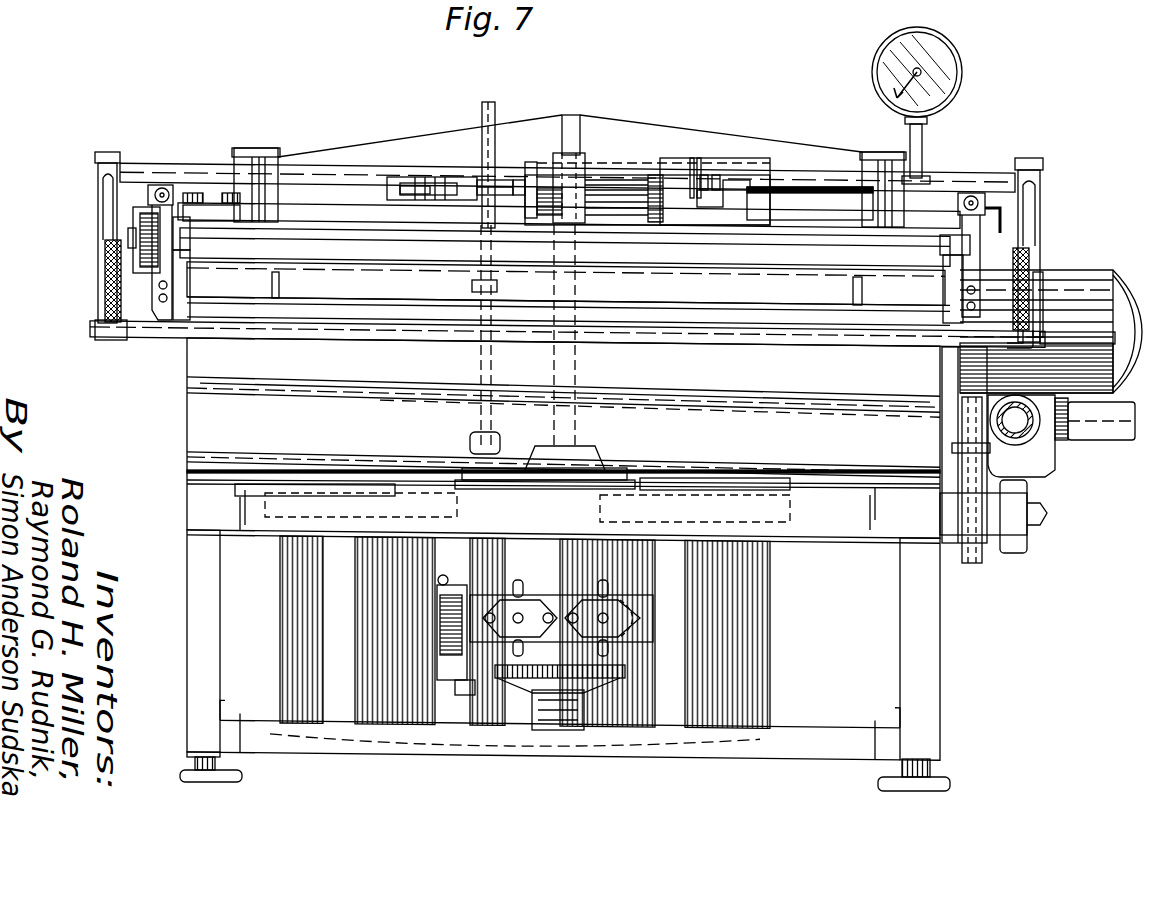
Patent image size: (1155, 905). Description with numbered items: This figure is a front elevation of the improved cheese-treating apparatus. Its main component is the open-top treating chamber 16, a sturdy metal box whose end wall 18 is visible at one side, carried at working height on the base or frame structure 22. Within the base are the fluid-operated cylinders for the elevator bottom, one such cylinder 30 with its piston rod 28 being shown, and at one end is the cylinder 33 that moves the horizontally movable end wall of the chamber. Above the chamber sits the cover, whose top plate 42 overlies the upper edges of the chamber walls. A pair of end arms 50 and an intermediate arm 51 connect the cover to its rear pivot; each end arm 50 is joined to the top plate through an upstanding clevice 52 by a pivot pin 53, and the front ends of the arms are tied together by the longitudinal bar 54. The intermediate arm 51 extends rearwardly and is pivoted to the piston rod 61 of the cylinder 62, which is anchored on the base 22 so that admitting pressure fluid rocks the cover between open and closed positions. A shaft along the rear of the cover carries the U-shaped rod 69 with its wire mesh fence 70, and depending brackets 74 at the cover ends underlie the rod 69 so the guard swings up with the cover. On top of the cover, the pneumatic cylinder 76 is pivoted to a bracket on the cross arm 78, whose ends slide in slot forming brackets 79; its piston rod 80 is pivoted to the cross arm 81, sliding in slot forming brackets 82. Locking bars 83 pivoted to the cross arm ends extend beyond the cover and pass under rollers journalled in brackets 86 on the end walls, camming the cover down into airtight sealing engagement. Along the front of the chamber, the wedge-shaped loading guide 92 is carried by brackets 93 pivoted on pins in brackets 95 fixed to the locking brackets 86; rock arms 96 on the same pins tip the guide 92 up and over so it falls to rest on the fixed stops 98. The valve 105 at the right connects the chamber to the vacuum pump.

The treating chamber 16 is at (221, 401).
The end wall 18 is at (255, 430).
The base or frame structure 22 is at (195, 546).
The piston rod 28 is at (750, 577).
The cylinder 30 is at (315, 600).
The cylinder 33 is at (1085, 290).
The top plate 42 is at (312, 228).
The end arm or bracket 50 is at (259, 148).
The intermediate arm or bracket 51 is at (570, 116).
The clevice 52 is at (268, 188).
The pivot pin 53 is at (235, 160).
The longitudinal bar 54 is at (735, 185).
The piston rod 61 is at (578, 385).
The cylinder 62 is at (540, 570).
The U-shaped rod 69 is at (715, 340).
The wire mesh fence 70 is at (112, 298).
The depending bracket 74 is at (1040, 340).
The pneumatic cylinder 76 is at (607, 195).
The cross arm 78 is at (725, 185).
The slot forming bracket 79 is at (672, 185).
The piston rod 80 is at (495, 188).
The cross arm 81 is at (430, 190).
The slot forming bracket 82 is at (400, 180).
The locking bar 83 is at (343, 192).
The bracket 86 is at (162, 188).
The loading guide 92 is at (705, 270).
The bracket 93 is at (178, 322).
The bracket 95 is at (963, 300).
The rock arm 96 is at (130, 268).
The fixed stop 98 is at (286, 287).
The valve 105 is at (1035, 455).